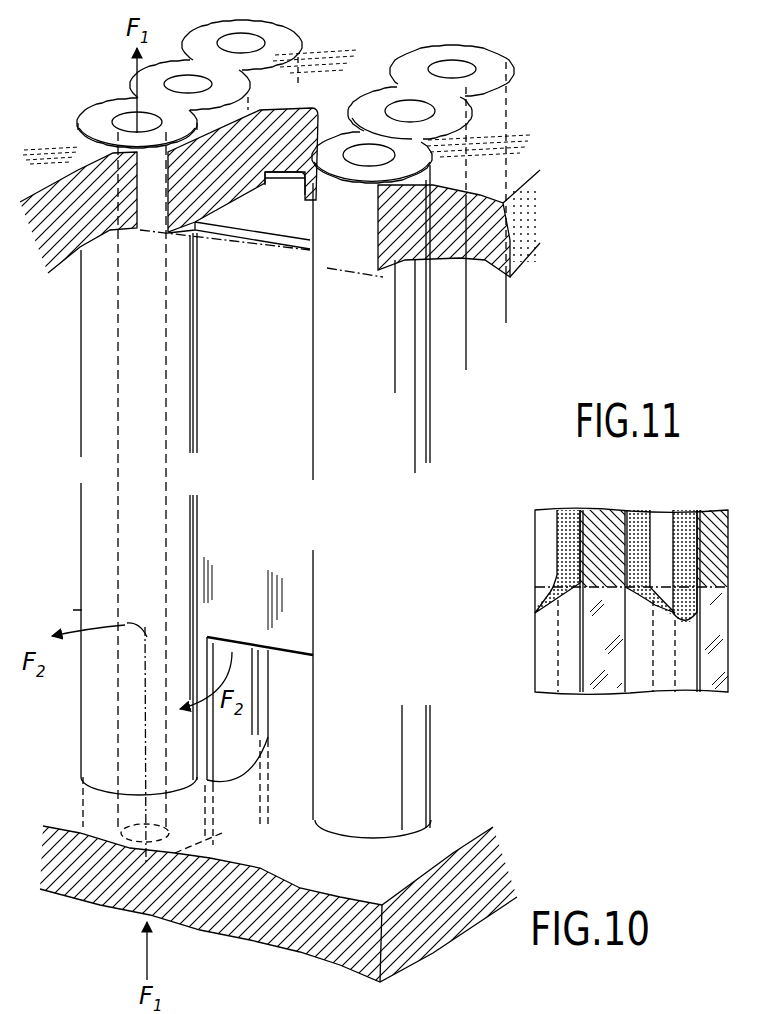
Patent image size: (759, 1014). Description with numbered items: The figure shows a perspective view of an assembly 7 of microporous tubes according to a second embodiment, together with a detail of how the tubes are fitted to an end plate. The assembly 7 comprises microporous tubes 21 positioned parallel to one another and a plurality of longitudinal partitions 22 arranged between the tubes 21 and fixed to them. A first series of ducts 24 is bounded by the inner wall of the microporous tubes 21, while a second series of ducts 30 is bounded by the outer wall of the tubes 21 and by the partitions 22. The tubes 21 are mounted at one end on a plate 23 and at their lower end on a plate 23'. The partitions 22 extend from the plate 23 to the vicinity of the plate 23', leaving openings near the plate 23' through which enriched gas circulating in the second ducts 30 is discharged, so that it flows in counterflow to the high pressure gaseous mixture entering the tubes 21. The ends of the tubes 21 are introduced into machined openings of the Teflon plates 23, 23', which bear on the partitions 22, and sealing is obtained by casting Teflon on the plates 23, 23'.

In FIG. 10, the assembly 7 is at (70, 435).
In FIG. 10, the microporous tube 21 is at (467, 143).
In FIG. 11, the microporous tube 21 is at (635, 510).
In FIG. 10, the partition 22 is at (235, 313).
In FIG. 11, the partition 22 is at (713, 688).
In FIG. 10, the plate 23 is at (302, 227).
In FIG. 11, the plate 23 is at (654, 580).
In FIG. 10, the plate 23' is at (278, 918).
In FIG. 10, the first series of ducts 24 is at (76, 115).
In FIG. 10, the second series of ducts 30 is at (290, 220).